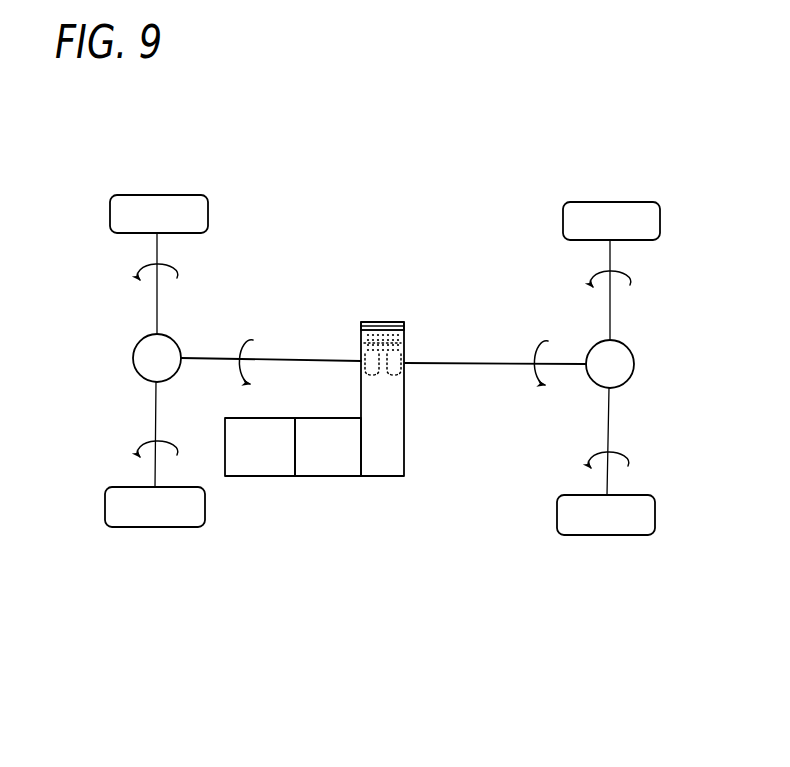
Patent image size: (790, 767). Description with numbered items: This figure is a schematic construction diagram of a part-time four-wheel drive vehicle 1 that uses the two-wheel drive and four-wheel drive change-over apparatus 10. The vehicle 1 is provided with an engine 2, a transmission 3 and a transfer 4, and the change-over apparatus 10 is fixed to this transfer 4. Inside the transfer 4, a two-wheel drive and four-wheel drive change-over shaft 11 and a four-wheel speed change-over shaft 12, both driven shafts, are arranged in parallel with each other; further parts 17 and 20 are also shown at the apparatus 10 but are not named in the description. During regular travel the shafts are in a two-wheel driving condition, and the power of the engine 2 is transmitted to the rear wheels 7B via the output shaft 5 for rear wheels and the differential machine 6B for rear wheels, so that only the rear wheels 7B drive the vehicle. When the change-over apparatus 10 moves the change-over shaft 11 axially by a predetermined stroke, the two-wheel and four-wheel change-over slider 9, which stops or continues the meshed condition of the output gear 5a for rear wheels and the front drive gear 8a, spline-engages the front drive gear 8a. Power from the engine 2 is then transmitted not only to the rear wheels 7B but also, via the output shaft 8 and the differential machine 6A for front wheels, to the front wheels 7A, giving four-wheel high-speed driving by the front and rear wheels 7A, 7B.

The part-time four-wheel drive vehicle 1 is at (383, 590).
The engine 2 is at (262, 476).
The transmission 3 is at (326, 476).
The transfer 4 is at (405, 462).
The output shaft for rear wheels 5 is at (507, 365).
The output gear for rear wheels 5a is at (397, 374).
The differential machine for front wheels 6A is at (175, 341).
The differential machine for rear wheels 6B is at (593, 347).
The front wheels 7A is at (157, 195).
The rear wheels 7B is at (611, 202).
The output shaft for front wheels 8 is at (288, 360).
The front drive gear 8a is at (370, 374).
The two-wheel and four-wheel change-over slider 9 is at (362, 345).
The two-wheel drive and four-wheel drive change-over apparatus 10 is at (423, 330).
The two-wheel drive and four-wheel drive change-over shaft 11 is at (366, 333).
The four-wheel speed change-over shaft 12 is at (405, 342).
The piston 17 is at (405, 324).
The actuator 20 is at (373, 322).